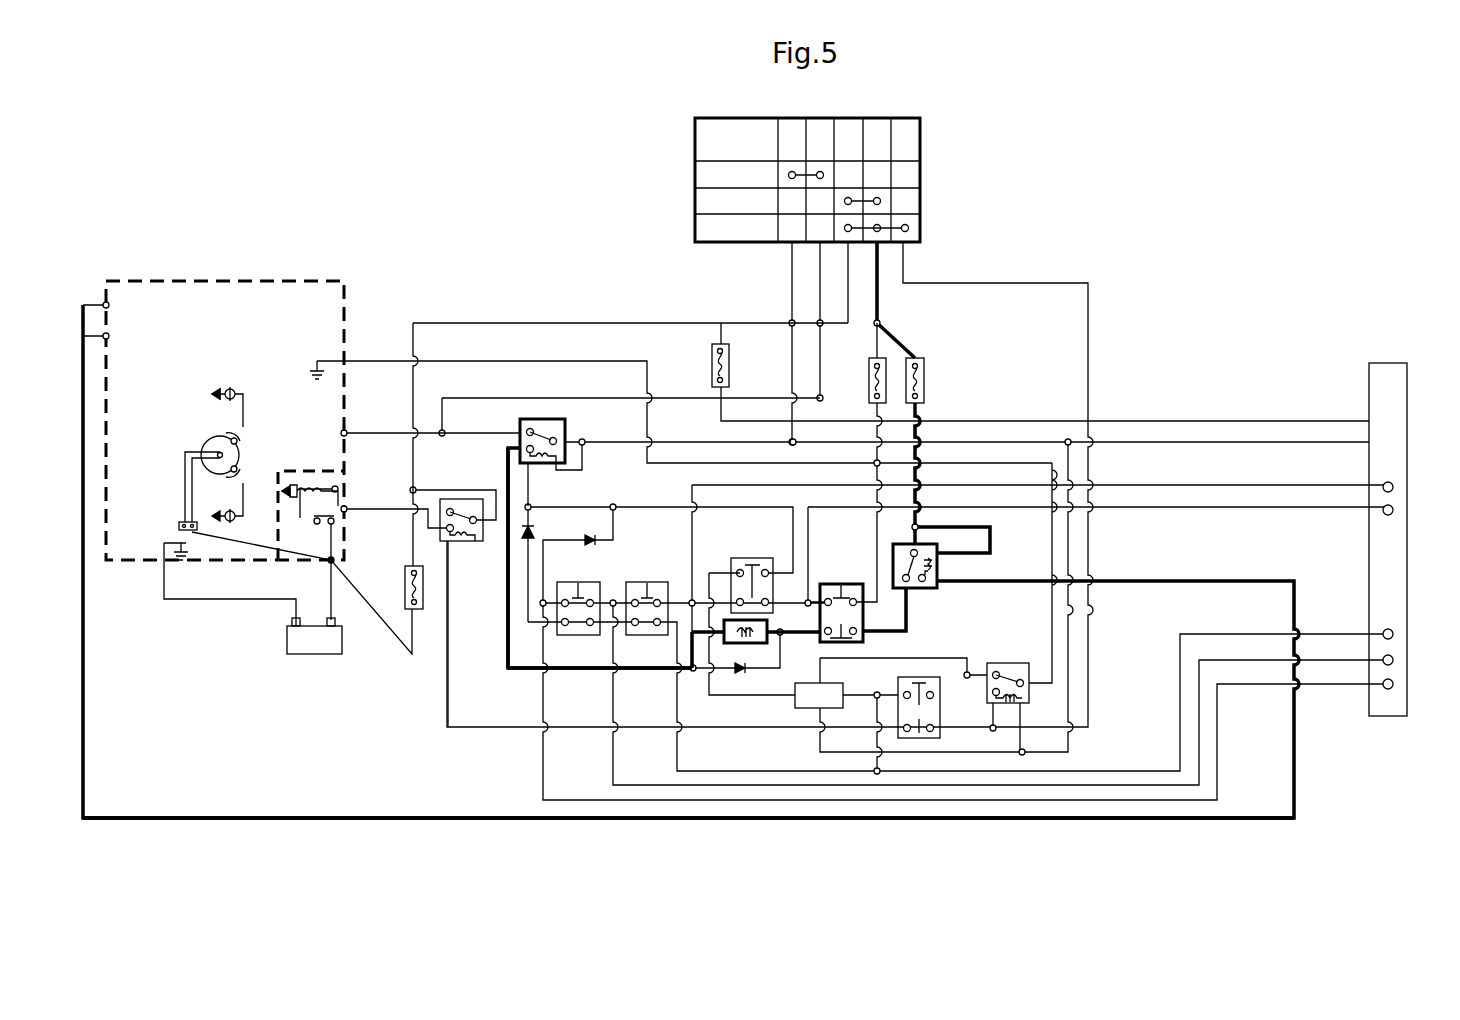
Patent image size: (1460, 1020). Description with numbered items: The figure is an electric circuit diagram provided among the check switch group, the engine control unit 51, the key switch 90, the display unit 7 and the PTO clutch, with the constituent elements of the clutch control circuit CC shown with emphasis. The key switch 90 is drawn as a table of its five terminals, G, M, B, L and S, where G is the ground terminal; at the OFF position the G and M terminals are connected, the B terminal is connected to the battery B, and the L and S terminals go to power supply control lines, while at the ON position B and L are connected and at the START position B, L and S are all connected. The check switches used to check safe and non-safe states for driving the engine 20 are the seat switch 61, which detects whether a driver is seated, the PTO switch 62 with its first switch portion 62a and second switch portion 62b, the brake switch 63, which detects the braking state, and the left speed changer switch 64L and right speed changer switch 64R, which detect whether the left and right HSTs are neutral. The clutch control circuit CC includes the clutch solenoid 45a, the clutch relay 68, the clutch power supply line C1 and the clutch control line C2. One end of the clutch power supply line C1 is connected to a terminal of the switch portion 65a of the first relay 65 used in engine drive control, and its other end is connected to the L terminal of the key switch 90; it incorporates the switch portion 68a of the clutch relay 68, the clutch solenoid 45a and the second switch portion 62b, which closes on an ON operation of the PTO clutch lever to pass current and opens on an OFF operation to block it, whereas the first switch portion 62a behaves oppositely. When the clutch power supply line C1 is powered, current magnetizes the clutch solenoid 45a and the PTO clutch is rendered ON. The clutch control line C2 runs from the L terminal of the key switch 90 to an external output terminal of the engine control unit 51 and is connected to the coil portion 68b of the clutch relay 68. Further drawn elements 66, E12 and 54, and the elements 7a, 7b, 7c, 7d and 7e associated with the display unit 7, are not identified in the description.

The key switch 90 is at (922, 166).
The engine 20 is at (262, 280).
The engine control unit 51 is at (324, 480).
The first relay 65 is at (574, 496).
The switch portion 65a is at (544, 437).
The relay 66 is at (458, 499).
The right speed changer switch 64R is at (572, 582).
The left speed changer switch 64L is at (655, 582).
The brake switch 63 is at (752, 558).
The PTO switch 62 is at (878, 590).
The first switch portion 62a is at (853, 597).
The second switch portion 62b is at (866, 636).
The clutch relay 68 is at (966, 589).
The switch portion 68a is at (915, 590).
The coil portion 68b is at (945, 565).
The seat switch 61 is at (920, 740).
The clutch solenoid 45a is at (753, 643).
The fuse E12 is at (875, 345).
The clutch control circuit CC is at (975, 411).
The display unit 7 is at (1388, 363).
The connector terminal 7a is at (1393, 511).
The connector terminal 7b is at (1393, 486).
The connector terminal 7c is at (1393, 660).
The connector terminal 7d is at (1393, 684).
The connector terminal 7e is at (1393, 634).
The clutch power supply line C1 is at (503, 622).
The clutch control line C2 is at (1132, 818).
The ground line 54 is at (1018, 818).
The battery B is at (314, 642).